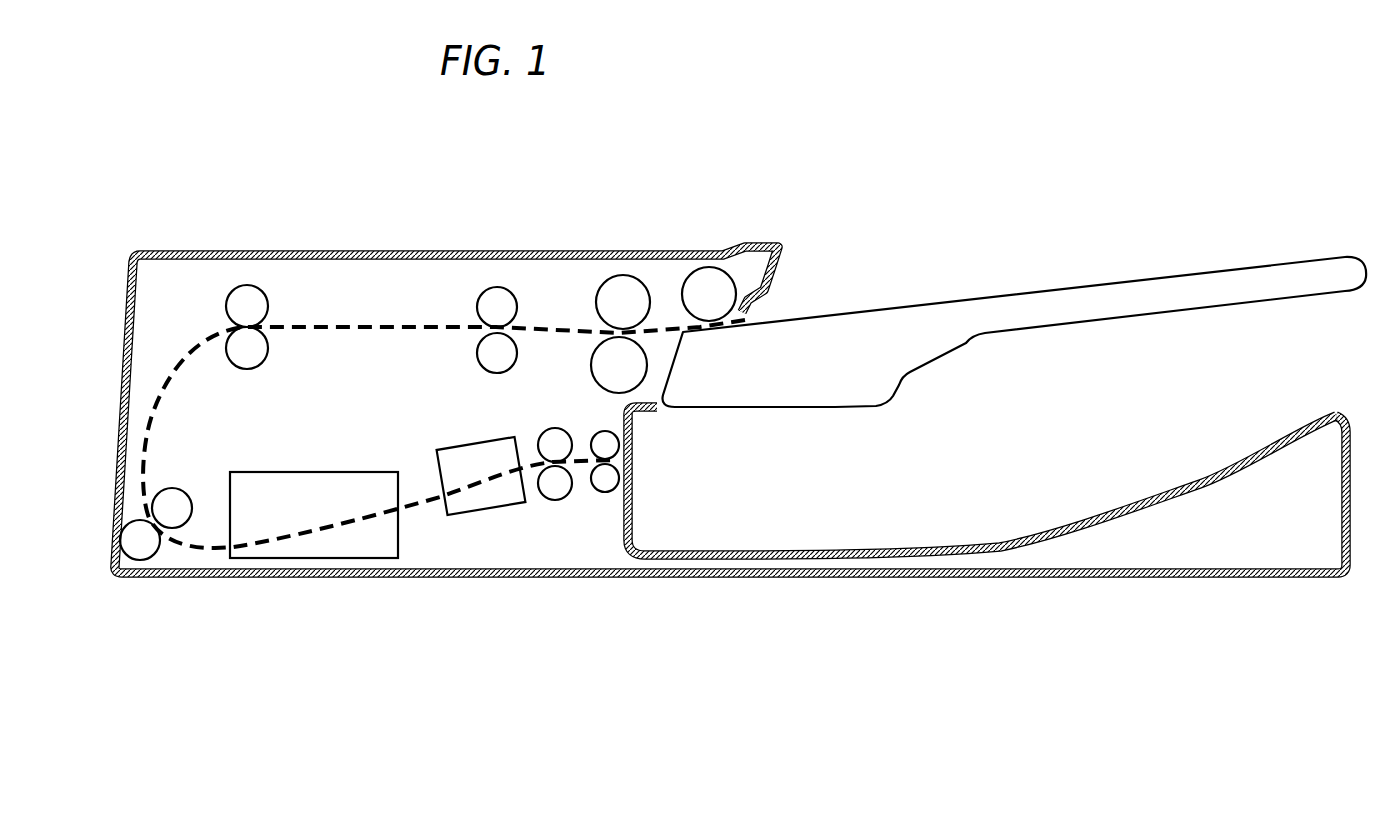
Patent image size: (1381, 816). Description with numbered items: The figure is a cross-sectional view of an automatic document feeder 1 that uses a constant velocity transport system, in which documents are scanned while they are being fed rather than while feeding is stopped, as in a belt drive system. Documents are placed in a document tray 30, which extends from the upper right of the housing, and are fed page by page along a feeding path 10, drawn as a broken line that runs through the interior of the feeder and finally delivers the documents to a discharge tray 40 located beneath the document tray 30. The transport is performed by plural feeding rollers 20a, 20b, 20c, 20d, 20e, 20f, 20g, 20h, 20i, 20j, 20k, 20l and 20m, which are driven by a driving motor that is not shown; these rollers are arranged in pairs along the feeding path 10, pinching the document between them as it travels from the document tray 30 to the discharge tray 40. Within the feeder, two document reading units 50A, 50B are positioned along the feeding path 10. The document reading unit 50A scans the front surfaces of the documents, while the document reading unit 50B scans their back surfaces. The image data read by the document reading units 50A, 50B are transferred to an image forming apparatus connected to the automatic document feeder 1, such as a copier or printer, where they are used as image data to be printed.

The automatic document feeder 1 is at (1040, 78).
The feeding path 10 is at (297, 323).
The feeding roller 20a is at (709, 267).
The feeding roller 20b is at (623, 275).
The feeding roller 20c is at (592, 370).
The feeding roller 20d is at (517, 300).
The feeding roller 20e is at (477, 348).
The feeding roller 20f is at (226, 303).
The feeding roller 20g is at (251, 370).
The feeding roller 20h is at (185, 489).
The feeding roller 20i is at (120, 540).
The feeding roller 20j is at (546, 430).
The feeding roller 20k is at (565, 500).
The feeding roller 20l is at (620, 450).
The feeding roller 20m is at (620, 480).
The document tray 30 is at (1107, 283).
The discharge tray 40 is at (813, 553).
The document reading unit 50A is at (275, 553).
The document reading unit 50B is at (472, 503).